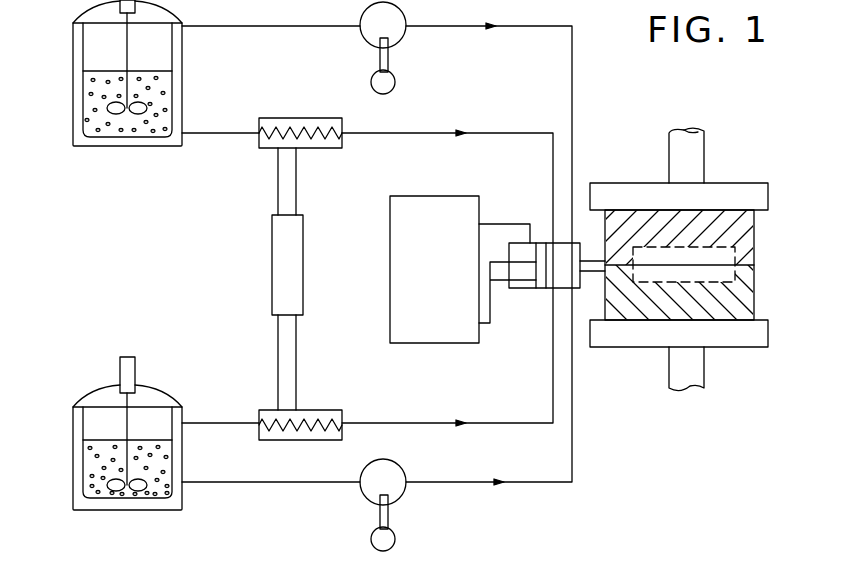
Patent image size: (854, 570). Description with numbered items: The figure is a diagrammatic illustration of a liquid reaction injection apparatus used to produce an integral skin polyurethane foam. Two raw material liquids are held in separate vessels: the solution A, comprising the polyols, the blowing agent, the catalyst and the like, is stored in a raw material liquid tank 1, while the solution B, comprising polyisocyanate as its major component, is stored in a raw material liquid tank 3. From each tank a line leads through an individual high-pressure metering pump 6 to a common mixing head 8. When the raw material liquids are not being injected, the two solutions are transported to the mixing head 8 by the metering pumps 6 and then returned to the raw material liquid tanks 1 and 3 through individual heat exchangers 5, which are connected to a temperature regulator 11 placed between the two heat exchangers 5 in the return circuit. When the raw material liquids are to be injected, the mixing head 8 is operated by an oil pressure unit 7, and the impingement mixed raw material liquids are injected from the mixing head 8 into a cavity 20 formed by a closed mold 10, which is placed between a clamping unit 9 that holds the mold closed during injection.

The raw material liquid tank 1 is at (77, 64).
The solution A is at (88, 120).
The raw material liquid tank 3 is at (79, 450).
The solution B is at (90, 489).
The heat exchanger 5 is at (268, 150).
The high-pressure metering pump 6 is at (403, 42).
The oil pressure unit 7 is at (390, 262).
The mixing head 8 is at (545, 290).
The clamping unit 9 is at (737, 185).
The closed mold 10 is at (754, 233).
The temperature regulator 11 is at (272, 268).
The cavity 20 is at (725, 276).